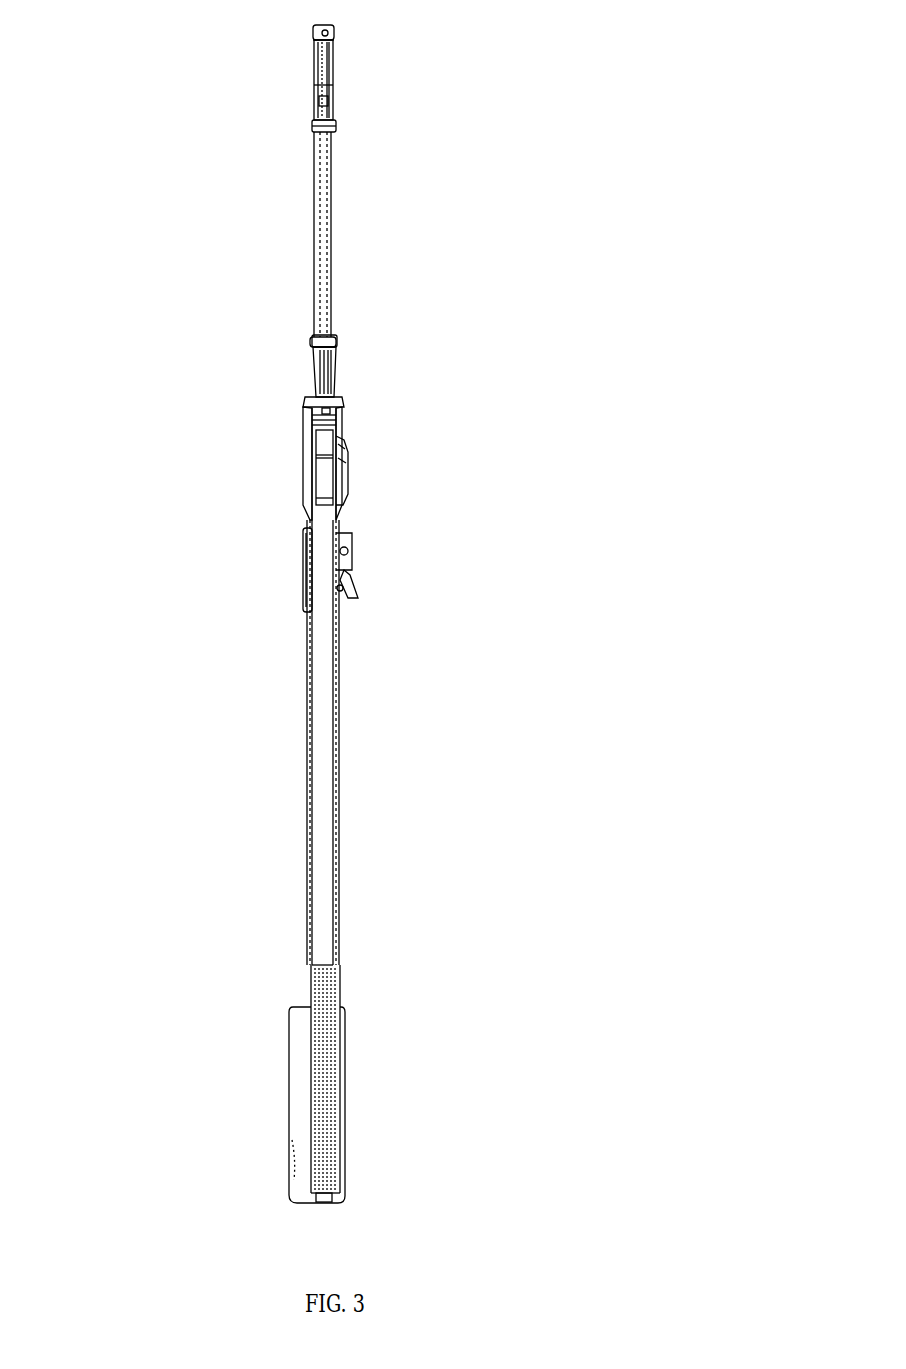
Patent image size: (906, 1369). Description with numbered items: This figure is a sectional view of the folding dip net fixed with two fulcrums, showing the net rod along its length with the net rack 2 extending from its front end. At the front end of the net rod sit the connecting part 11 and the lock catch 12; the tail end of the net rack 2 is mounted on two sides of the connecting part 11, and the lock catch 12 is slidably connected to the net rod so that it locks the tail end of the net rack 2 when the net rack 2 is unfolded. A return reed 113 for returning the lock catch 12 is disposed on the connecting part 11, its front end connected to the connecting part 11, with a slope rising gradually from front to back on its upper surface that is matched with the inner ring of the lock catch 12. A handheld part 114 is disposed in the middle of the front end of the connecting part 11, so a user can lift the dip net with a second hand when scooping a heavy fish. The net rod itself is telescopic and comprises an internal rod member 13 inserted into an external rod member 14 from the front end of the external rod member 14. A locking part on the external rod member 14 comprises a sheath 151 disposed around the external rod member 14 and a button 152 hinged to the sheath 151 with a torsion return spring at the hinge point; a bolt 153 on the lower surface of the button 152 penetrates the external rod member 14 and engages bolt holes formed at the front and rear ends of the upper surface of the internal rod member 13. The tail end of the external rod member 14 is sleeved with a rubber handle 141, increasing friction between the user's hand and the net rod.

The net rack 2 is at (315, 233).
The connecting part 11 is at (345, 370).
The handheld part 114 is at (313, 382).
The lock catch 12 is at (300, 473).
The return reed 113 is at (343, 478).
The internal rod member 13 is at (323, 715).
The external rod member 14 is at (340, 875).
The sheath 151 is at (305, 565).
The button 152 is at (360, 595).
The bolt 153 is at (343, 588).
The rubber handle 141 is at (340, 1083).